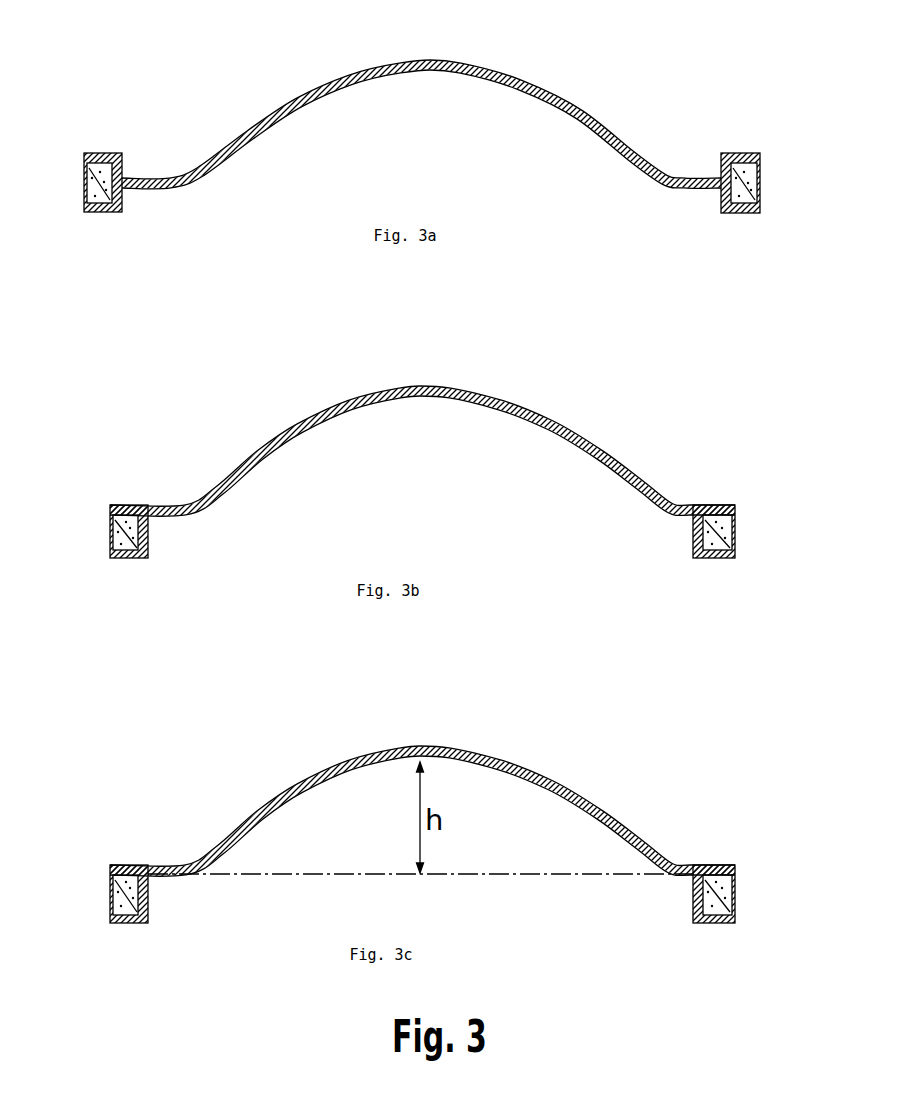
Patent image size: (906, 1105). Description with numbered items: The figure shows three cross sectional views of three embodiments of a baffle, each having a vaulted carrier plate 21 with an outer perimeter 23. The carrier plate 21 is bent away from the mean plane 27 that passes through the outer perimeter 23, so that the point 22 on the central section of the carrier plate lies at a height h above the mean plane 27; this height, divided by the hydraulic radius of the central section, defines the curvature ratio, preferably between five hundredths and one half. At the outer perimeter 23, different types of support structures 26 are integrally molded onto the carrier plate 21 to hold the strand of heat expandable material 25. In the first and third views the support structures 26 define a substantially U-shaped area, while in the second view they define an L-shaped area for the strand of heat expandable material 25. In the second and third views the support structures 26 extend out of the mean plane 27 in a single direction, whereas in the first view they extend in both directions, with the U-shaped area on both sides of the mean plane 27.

In FIG. 3A, the carrier plate 21 is at (568, 97).
In FIG. 3B, the carrier plate 21 is at (568, 422).
In FIG. 3C, the carrier plate 21 is at (568, 787).
In FIG. 3C, the point on the central section of the carrier plate 22 is at (420, 752).
In FIG. 3A, the outer perimeter 23 is at (127, 171).
In FIG. 3B, the outer perimeter 23 is at (118, 500).
In FIG. 3C, the outer perimeter 23 is at (118, 860).
In FIG. 3A, the strand of heat expandable material 25 is at (88, 188).
In FIG. 3B, the strand of heat expandable material 25 is at (112, 558).
In FIG. 3C, the strand of heat expandable material 25 is at (112, 923).
In FIG. 3A, the support structures 26 is at (100, 153).
In FIG. 3B, the support structures 26 is at (150, 537).
In FIG. 3C, the support structures 26 is at (150, 897).
In FIG. 3C, the mean plane 27 is at (490, 876).